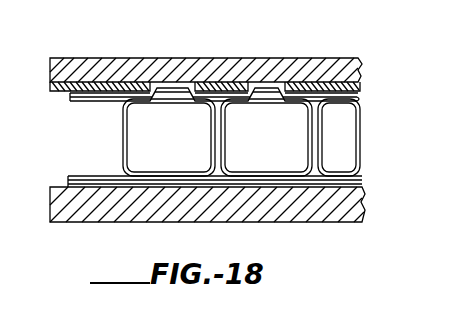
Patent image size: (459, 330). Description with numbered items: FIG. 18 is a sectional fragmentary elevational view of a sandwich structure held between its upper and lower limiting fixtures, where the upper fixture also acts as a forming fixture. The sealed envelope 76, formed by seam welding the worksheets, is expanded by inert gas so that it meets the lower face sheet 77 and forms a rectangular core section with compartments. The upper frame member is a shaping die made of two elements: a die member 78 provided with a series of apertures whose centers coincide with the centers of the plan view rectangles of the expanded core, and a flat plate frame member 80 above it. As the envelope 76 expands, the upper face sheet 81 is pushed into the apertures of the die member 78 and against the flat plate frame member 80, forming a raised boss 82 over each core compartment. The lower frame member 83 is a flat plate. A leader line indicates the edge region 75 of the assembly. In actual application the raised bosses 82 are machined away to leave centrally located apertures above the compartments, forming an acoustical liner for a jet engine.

The bonding layer edge 75 is at (70, 103).
The envelope 76 is at (56, 107).
The lower face sheet 77 is at (364, 163).
The die member 78 is at (361, 90).
The flat plate frame member 80 is at (360, 56).
The upper face sheet 81 is at (358, 97).
The raised boss 82 is at (274, 101).
The lower frame member 83 is at (270, 223).